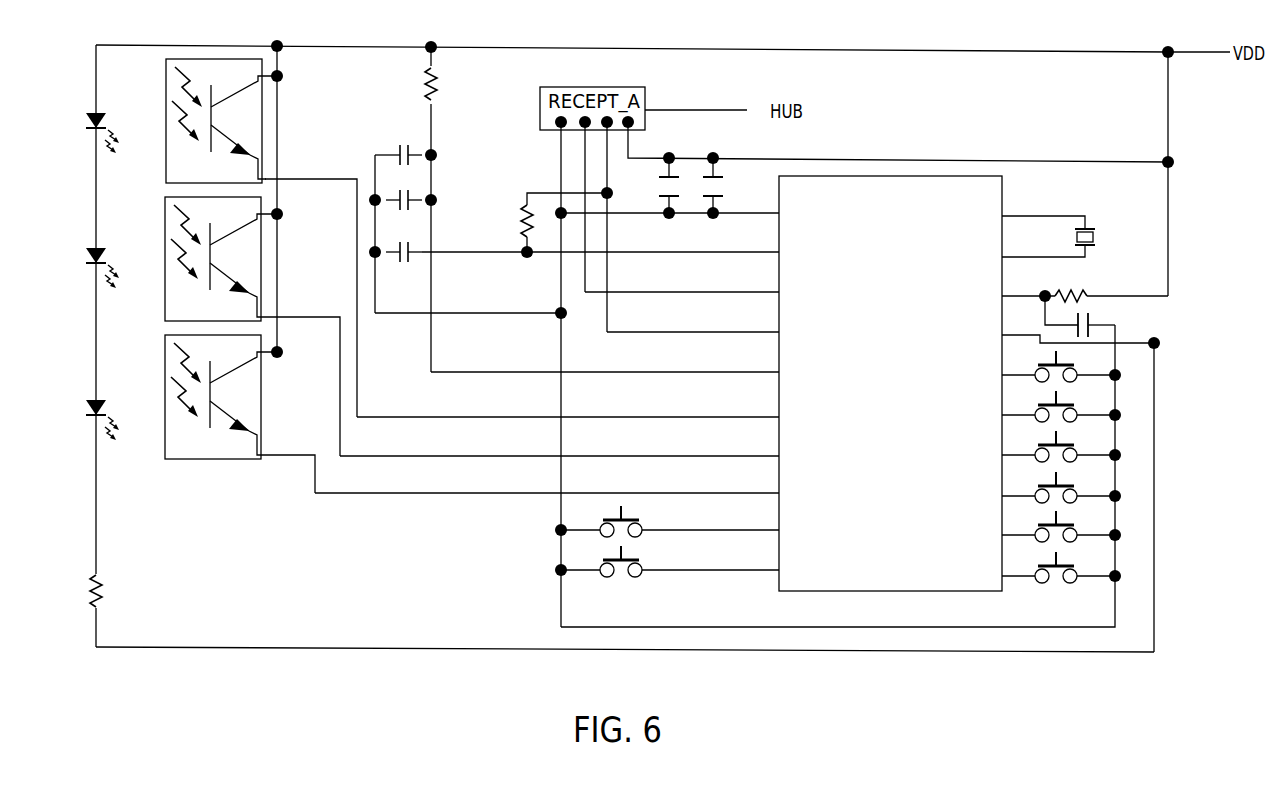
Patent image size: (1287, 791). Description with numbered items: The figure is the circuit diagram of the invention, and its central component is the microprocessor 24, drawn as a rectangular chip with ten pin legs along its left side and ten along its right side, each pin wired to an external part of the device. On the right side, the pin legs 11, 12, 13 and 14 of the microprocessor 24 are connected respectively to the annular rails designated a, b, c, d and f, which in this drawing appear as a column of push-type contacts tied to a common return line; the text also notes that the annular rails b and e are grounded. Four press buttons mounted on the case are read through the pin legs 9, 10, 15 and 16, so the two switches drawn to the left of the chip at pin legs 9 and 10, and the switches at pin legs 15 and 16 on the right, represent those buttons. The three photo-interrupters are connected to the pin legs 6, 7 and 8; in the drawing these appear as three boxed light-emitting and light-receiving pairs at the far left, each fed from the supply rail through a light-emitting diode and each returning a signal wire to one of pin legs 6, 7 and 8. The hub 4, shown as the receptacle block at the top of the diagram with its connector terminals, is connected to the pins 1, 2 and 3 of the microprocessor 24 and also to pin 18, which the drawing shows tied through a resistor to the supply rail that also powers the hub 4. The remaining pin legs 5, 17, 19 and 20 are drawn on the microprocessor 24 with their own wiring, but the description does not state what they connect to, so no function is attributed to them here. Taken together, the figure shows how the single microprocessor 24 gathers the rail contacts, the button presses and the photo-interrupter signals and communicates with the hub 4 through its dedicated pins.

The microprocessor 24 is at (888, 591).
The pin leg 1 is at (670, 200).
The pin leg 2 is at (600, 236).
The pin leg 3 is at (682, 280).
The hub 4 is at (693, 317).
The pin 5 REST 5 is at (605, 359).
The pin leg 6 is at (568, 400).
The pin leg 7 is at (559, 441).
The pin leg 8 is at (547, 478).
The pin leg 9 is at (710, 515).
The pin leg 10 is at (710, 556).
The pin leg 11 is at (1018, 561).
The pin leg 12 is at (1018, 521).
The pin leg 13 is at (1018, 482).
The pin leg 14 is at (1018, 442).
The pin leg 15 is at (1018, 403).
The pin leg 16 is at (1018, 362).
The pin 17 LED 17 is at (1078, 325).
The pin leg 18 is at (1028, 284).
The pin 19 OSC2 19 is at (1043, 244).
The pin 20 OSC1 20 is at (1043, 211).